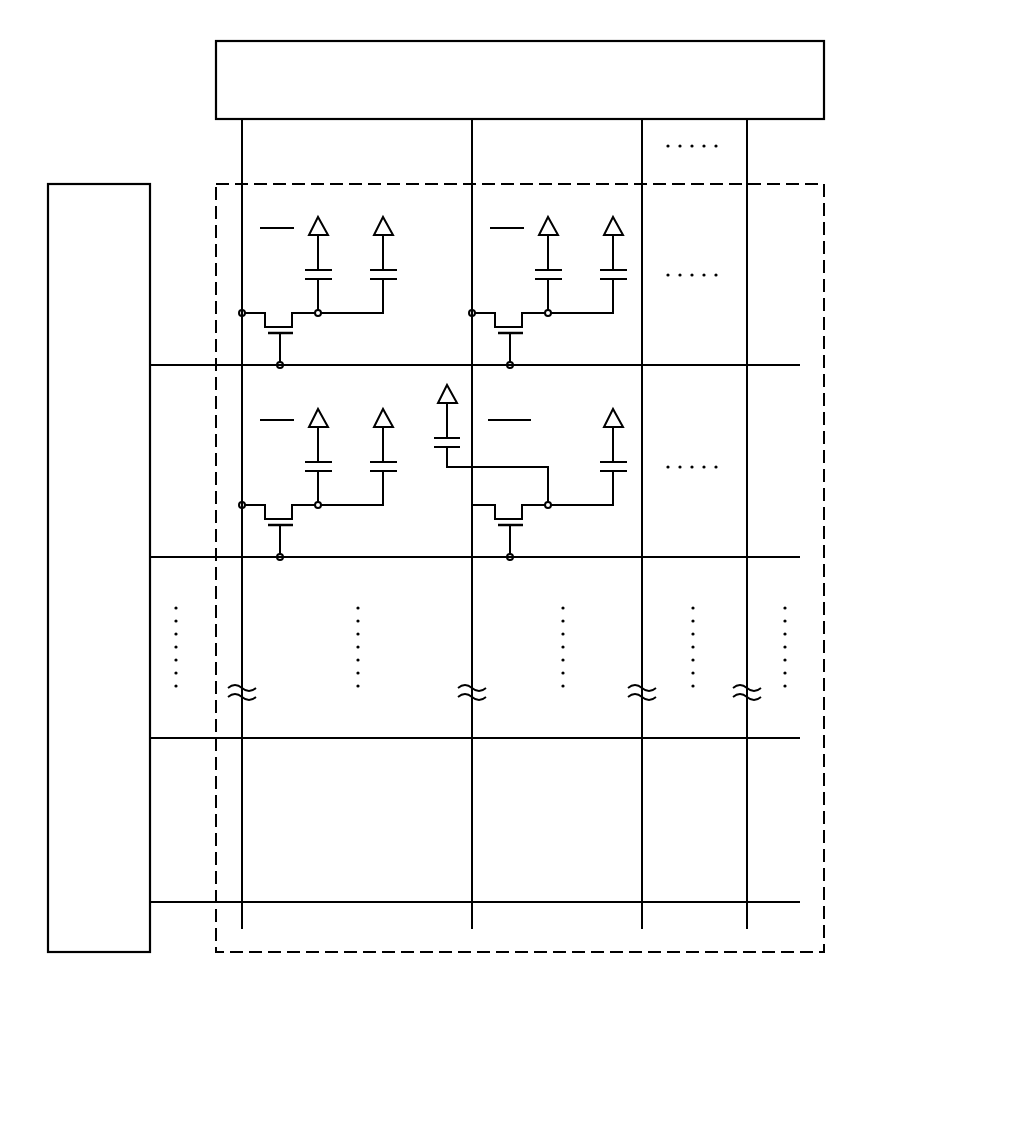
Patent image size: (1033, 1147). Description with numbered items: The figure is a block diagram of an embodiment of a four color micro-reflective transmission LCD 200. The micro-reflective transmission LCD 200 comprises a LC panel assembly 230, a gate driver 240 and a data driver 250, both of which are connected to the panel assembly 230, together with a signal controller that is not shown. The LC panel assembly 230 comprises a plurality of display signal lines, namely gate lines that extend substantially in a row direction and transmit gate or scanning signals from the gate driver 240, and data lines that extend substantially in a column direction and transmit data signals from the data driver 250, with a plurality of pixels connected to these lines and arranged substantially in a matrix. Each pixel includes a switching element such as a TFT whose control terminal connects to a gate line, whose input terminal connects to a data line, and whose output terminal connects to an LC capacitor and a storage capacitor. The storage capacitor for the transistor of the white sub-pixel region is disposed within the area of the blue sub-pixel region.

The micro-reflective transmission LCD 200 is at (121, 30).
The data driver 250 is at (670, 42).
The gate driver 240 is at (75, 184).
The LC panel assembly 230 is at (213, 200).